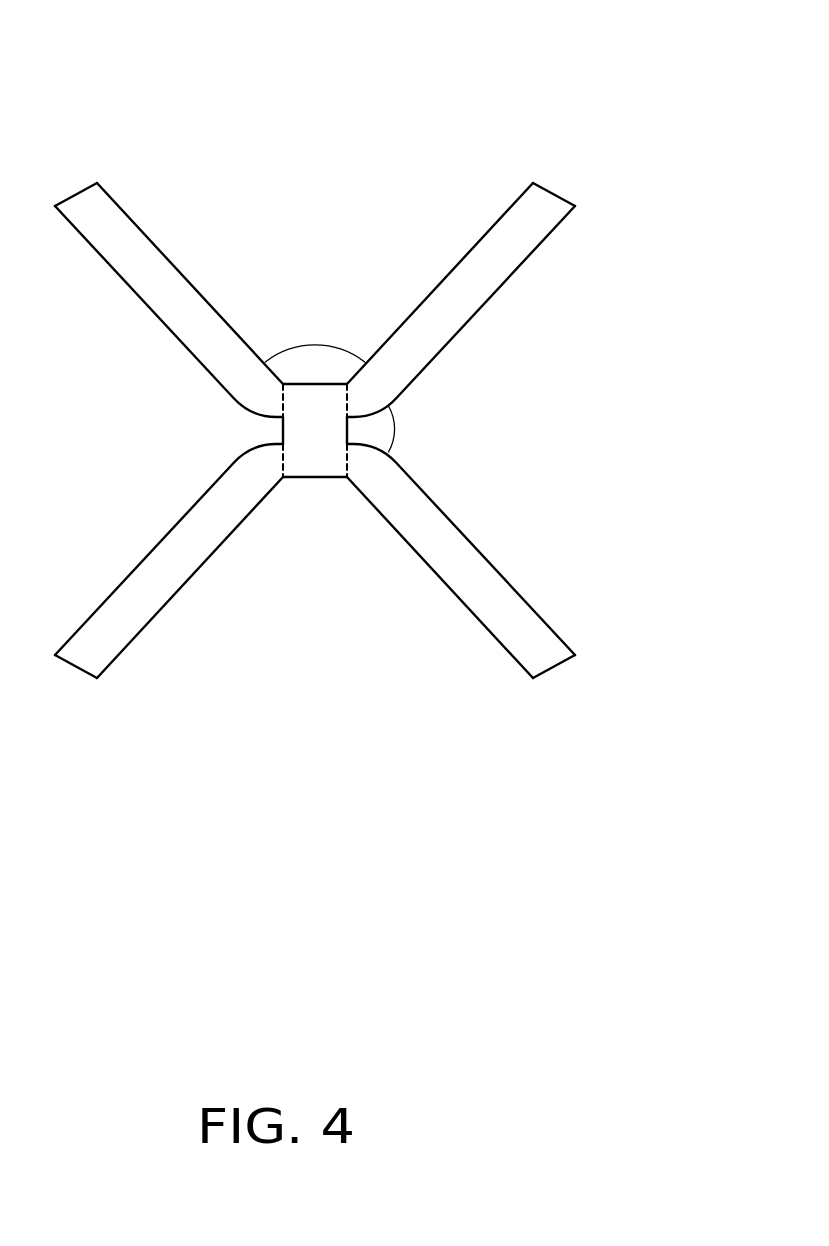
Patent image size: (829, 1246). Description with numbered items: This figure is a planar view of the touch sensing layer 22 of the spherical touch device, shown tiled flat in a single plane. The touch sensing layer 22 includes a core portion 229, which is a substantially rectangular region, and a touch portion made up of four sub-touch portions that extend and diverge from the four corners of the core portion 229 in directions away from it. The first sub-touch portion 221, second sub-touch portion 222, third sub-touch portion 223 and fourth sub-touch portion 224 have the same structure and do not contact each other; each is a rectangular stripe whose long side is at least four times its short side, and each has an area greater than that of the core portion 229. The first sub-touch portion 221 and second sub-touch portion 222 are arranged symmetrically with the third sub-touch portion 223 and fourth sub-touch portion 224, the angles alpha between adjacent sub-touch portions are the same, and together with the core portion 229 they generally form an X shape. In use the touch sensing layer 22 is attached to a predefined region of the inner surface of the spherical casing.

The touch sensing layer 22 is at (378, 43).
The first sub-touch portion 221 is at (495, 256).
The second sub-touch portion 222 is at (198, 320).
The third sub-touch portion 223 is at (468, 573).
The fourth sub-touch portion 224 is at (233, 497).
The core portion 229 is at (295, 429).